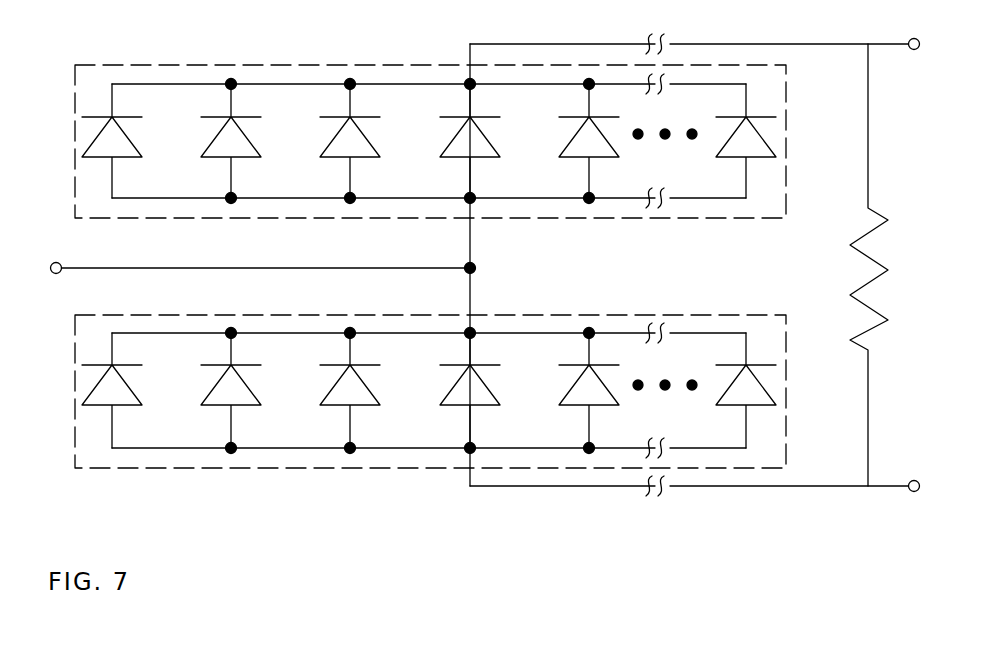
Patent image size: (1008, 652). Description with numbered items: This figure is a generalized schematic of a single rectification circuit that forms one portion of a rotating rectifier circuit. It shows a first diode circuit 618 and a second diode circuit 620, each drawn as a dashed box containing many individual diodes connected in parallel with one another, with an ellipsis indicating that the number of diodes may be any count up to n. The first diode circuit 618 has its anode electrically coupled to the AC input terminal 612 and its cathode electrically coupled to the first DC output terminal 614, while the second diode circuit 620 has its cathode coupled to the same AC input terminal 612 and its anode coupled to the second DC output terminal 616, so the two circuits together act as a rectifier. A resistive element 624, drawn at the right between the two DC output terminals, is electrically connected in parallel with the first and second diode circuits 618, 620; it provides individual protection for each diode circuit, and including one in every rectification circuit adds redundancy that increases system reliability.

The AC input terminal 612 is at (61, 264).
The first DC output terminal 614 is at (908, 40).
The second DC output terminal 616 is at (910, 491).
The first diode circuit 618 is at (167, 65).
The second diode circuit 620 is at (197, 471).
The resistive element 624 is at (872, 276).